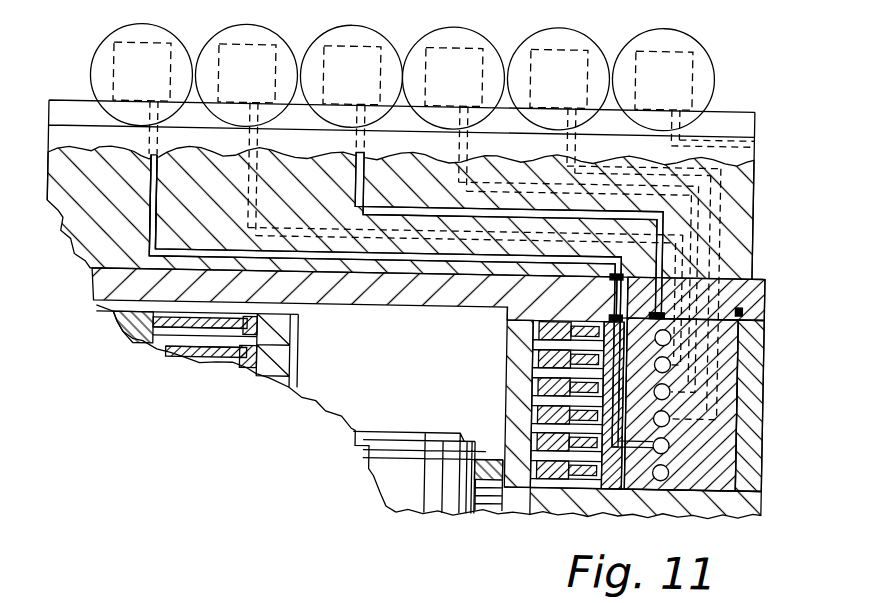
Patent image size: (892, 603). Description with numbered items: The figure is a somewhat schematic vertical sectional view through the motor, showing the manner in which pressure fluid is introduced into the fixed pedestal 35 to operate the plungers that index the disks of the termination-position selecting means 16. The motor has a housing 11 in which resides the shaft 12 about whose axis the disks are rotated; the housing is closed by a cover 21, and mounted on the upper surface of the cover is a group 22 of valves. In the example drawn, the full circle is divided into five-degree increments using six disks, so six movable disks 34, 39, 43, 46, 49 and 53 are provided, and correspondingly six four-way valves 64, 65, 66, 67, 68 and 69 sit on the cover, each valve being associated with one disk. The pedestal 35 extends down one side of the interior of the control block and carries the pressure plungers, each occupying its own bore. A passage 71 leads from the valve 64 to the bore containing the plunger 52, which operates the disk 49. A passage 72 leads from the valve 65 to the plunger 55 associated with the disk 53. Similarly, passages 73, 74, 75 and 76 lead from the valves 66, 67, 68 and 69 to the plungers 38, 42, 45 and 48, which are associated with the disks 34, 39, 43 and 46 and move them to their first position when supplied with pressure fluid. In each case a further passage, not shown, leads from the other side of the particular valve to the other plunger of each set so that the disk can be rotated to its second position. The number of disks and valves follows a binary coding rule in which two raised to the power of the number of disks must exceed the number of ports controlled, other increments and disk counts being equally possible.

The housing 11 is at (768, 500).
The shaft 12 is at (412, 426).
The means for selecting a termination position 16 is at (537, 356).
The cover 21 is at (757, 273).
The group of valves 22 is at (735, 100).
The disk 34 is at (296, 329).
The pedestal 35 is at (745, 468).
The pressure plunger 38 is at (690, 328).
The movable disk 39 is at (262, 352).
The plunger 42 is at (690, 354).
The movable disk 43 is at (537, 386).
The plunger 45 is at (690, 381).
The disk 46 is at (546, 413).
The plunger 48 is at (690, 408).
The disk 49 is at (583, 438).
The plunger 52 is at (676, 436).
The disk 53 is at (556, 476).
The plunger 55 is at (676, 463).
The four-way valve 64 is at (106, 43).
The four-way valve 65 is at (212, 41).
The four-way valve 66 is at (317, 40).
The four-way valve 67 is at (420, 40).
The four-way valve 68 is at (524, 39).
The four-way valve 69 is at (635, 28).
The passage 71 is at (157, 162).
The passage 72 is at (258, 214).
The passage 73 is at (370, 156).
The passage 74 is at (466, 143).
The passage 75 is at (575, 142).
The passage 76 is at (755, 129).